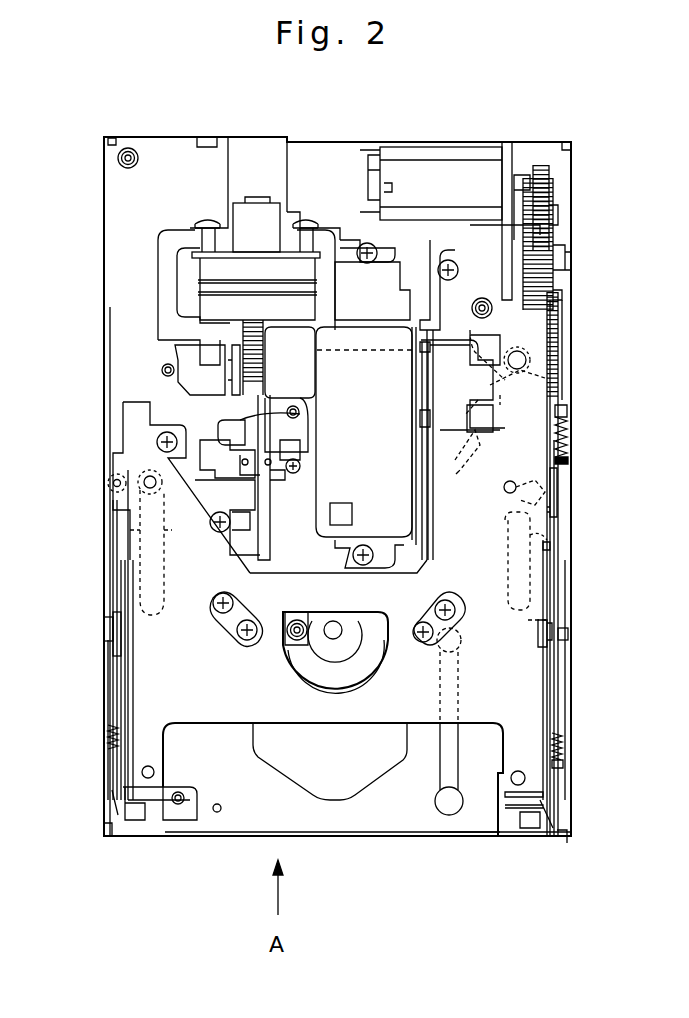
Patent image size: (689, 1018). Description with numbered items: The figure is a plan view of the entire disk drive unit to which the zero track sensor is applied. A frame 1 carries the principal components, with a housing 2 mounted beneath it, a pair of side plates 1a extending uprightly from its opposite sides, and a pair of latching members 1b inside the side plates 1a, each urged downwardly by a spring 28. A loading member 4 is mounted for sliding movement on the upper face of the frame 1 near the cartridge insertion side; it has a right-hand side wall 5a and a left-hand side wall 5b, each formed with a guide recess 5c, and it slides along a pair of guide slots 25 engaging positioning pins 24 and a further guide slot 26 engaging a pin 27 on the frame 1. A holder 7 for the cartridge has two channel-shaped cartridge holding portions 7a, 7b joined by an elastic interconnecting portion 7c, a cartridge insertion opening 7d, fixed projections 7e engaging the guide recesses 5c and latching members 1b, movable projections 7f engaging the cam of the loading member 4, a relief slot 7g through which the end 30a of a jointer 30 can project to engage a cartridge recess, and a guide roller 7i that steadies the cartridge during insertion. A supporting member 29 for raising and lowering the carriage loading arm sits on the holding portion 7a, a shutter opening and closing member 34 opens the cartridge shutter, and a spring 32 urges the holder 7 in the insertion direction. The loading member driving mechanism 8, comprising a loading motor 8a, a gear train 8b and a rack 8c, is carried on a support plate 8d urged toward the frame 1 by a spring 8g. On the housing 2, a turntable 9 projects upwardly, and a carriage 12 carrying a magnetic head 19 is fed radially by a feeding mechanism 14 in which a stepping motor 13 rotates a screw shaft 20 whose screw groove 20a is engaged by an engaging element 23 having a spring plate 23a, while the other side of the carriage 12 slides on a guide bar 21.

The frame 1 is at (150, 150).
The side plates 1a is at (110, 687).
The latching members 1b is at (112, 652).
The housing 2 is at (316, 228).
The loading member 4 is at (480, 822).
The right-hand side wall 5a is at (558, 592).
The left-hand side wall 5b is at (113, 566).
The guide recess 5c is at (124, 602).
The holder 7 is at (380, 705).
The cartridge holding portion 7a is at (558, 422).
The cartridge holding portion 7b is at (128, 582).
The interconnecting portion 7c is at (318, 703).
The cartridge insertion opening 7d is at (138, 822).
The fixed projection 7e is at (106, 630).
The movable projection 7f is at (566, 464).
The relief slot 7g is at (557, 505).
The guide roller 7i is at (110, 480).
The loading member driving mechanism 8 is at (545, 190).
The loading motor 8a is at (442, 172).
The gear train 8b is at (556, 200).
The rack 8c is at (572, 300).
The support plate 8d is at (508, 177).
The spring 8g is at (562, 322).
The turntable 9 is at (298, 654).
The carriage 12 is at (343, 368).
The stepping motor 13 is at (246, 270).
The feeding mechanism 14 is at (186, 268).
The magnetic head 19 is at (338, 510).
The screw shaft 20 is at (262, 448).
The screw groove 20a is at (277, 357).
The guide bar 21 is at (395, 272).
The engaging element 23 is at (268, 410).
The spring plate 23a is at (300, 416).
The positioning pin 24 is at (138, 497).
The guide slots 25 is at (132, 532).
The guide slot 26 is at (438, 768).
The pin 27 is at (460, 674).
The spring 28 is at (110, 738).
The supporting member 29 is at (524, 353).
The jointer 30 is at (547, 537).
The end of the jointer 30a is at (552, 555).
The spring 32 is at (567, 440).
The shutter opening and closing member 34 is at (558, 386).